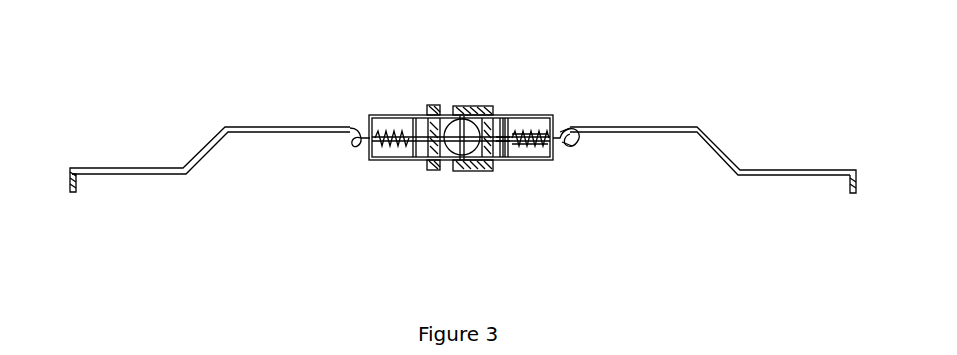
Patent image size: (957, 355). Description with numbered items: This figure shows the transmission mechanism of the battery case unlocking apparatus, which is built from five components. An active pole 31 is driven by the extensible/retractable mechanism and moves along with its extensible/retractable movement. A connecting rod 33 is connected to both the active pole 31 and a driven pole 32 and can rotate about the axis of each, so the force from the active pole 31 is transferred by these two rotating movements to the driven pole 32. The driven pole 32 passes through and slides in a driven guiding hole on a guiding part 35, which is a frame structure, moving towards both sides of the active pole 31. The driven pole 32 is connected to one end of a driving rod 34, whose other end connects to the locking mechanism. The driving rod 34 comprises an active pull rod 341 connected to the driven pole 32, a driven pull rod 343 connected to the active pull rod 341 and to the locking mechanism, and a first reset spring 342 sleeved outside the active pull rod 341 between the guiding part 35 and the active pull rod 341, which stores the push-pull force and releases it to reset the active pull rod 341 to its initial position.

The active pole 31 is at (453, 170).
The driven pole 32 is at (490, 103).
The connecting rod 33 is at (452, 107).
The driving rod 34 is at (676, 207).
The active pull rod 341 is at (507, 157).
The first reset spring 342 is at (557, 157).
The driven pull rod 343 is at (713, 186).
The guiding part 35 is at (543, 113).